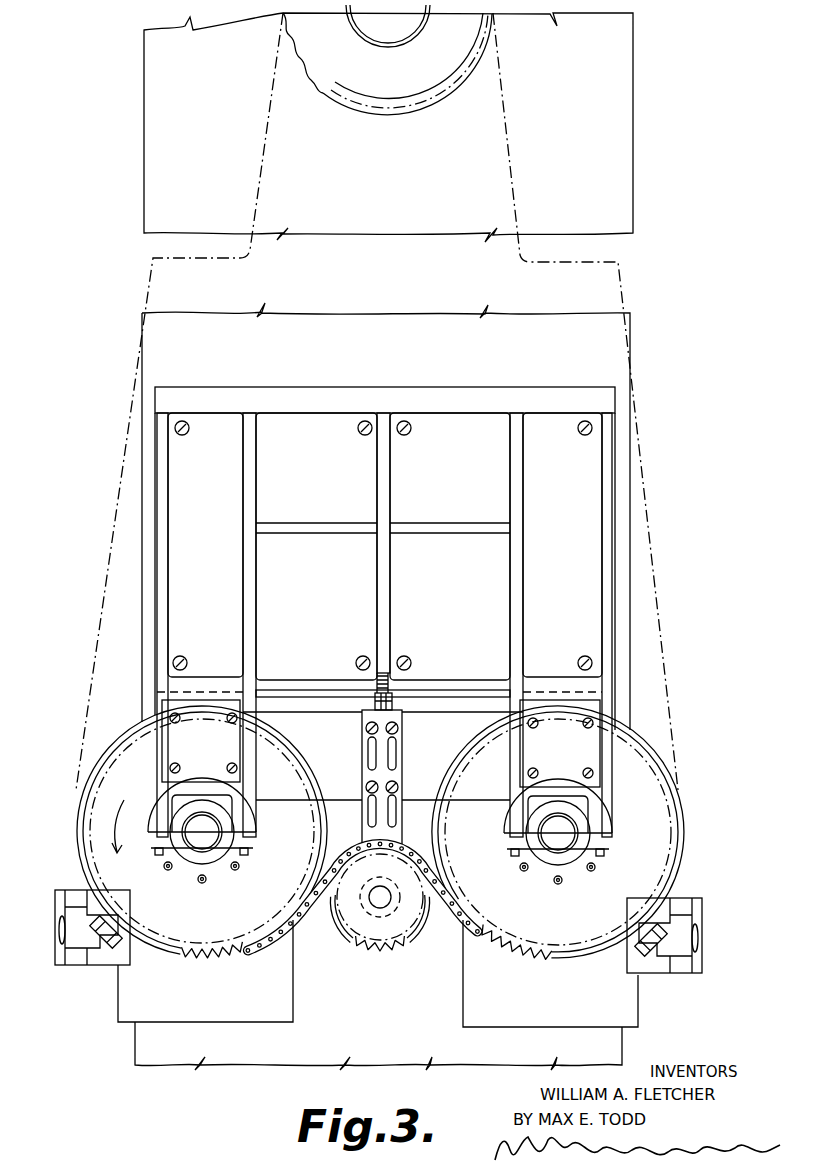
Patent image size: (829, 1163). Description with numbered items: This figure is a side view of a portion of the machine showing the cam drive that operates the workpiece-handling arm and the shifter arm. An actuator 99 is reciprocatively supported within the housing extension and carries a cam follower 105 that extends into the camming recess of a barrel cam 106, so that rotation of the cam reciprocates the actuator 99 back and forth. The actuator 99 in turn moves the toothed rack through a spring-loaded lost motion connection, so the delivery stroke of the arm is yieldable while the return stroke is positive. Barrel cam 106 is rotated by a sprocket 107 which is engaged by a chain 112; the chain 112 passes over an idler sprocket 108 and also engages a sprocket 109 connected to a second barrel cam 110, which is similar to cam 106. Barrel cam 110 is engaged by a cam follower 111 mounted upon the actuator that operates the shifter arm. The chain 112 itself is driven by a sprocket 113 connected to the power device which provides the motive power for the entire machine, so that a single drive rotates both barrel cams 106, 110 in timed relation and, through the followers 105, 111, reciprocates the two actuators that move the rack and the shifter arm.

The actuator 99 is at (75, 930).
The cam follower 105 is at (123, 920).
The barrel cam 106 is at (100, 839).
The sprocket 107 is at (238, 937).
The idler sprocket 108 is at (393, 930).
The sprocket 109 is at (567, 942).
The barrel cam 110 is at (655, 840).
The cam follower 111 is at (642, 925).
The chain 112 is at (518, 183).
The sprocket 113 is at (353, 78).